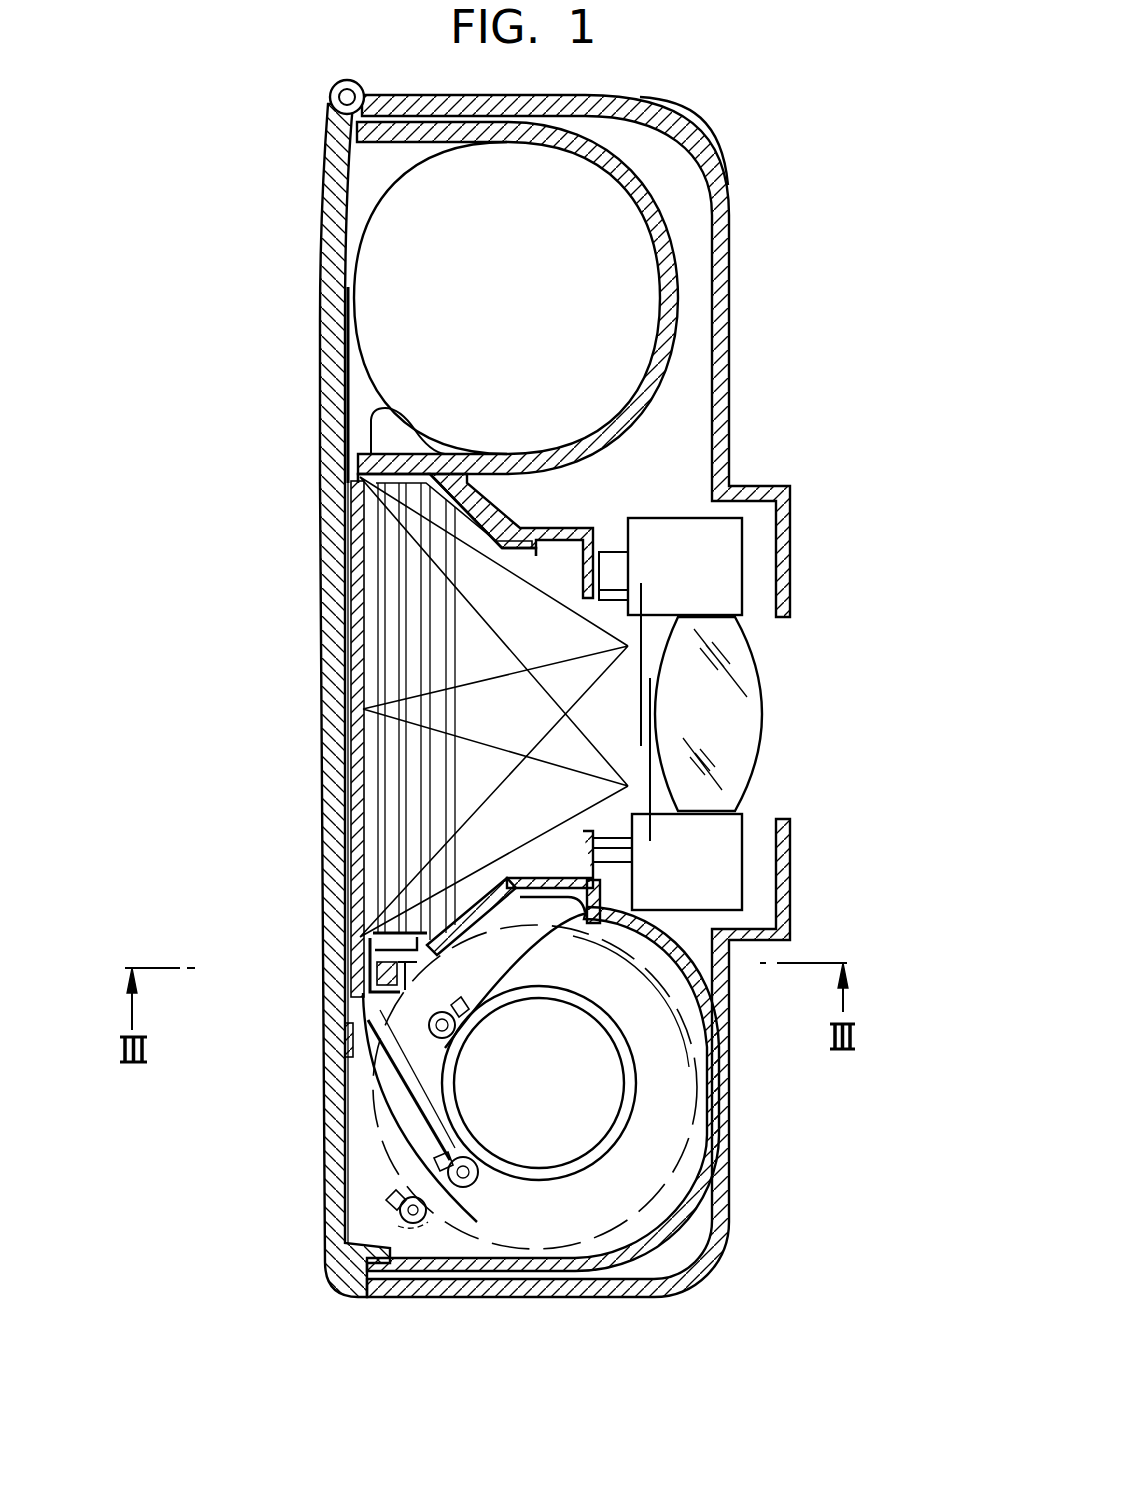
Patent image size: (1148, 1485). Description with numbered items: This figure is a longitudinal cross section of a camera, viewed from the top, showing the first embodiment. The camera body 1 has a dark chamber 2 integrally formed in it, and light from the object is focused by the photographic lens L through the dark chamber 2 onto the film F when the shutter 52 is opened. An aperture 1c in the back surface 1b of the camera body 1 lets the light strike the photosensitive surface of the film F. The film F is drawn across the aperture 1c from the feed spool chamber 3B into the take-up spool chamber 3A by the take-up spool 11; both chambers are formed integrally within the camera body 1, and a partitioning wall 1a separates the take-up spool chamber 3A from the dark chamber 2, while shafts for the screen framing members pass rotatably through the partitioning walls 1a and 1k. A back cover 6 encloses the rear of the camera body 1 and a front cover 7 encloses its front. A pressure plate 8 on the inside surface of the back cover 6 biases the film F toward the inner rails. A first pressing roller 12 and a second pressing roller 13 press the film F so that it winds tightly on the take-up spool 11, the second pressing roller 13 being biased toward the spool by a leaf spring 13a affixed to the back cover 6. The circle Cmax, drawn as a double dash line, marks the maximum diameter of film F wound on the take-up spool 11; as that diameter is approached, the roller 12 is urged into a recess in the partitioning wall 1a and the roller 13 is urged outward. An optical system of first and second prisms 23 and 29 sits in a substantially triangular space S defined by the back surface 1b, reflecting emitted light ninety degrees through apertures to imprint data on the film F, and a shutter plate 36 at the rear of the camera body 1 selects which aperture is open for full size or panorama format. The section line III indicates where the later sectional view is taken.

The camera body 1 is at (681, 286).
The front cover 7 is at (718, 154).
The back cover 6 is at (321, 252).
The pressure plate 8 is at (355, 596).
The feed spool chamber 3B is at (472, 280).
The partitioning wall 1k is at (560, 522).
The aperture 1c is at (366, 541).
The back surface 1b is at (367, 948).
The shutter plate 36 is at (368, 963).
The dark chamber 2 is at (513, 647).
The photographic lens L is at (750, 683).
The shutter 52 is at (655, 733).
The take-up spool chamber 3A is at (640, 1067).
The take-up spool 11 is at (607, 1109).
The maximum diameter circle Cmax is at (560, 1262).
The first pressing roller 12 is at (533, 935).
The partitioning wall 1a is at (474, 917).
The film F is at (445, 1072).
The first prism 23 is at (357, 1075).
The second prism 29 is at (360, 1058).
The triangular space S is at (412, 993).
The second pressing roller 13 is at (463, 1190).
The leaf spring 13a is at (353, 1157).
The section line III- III is at (487, 1012).